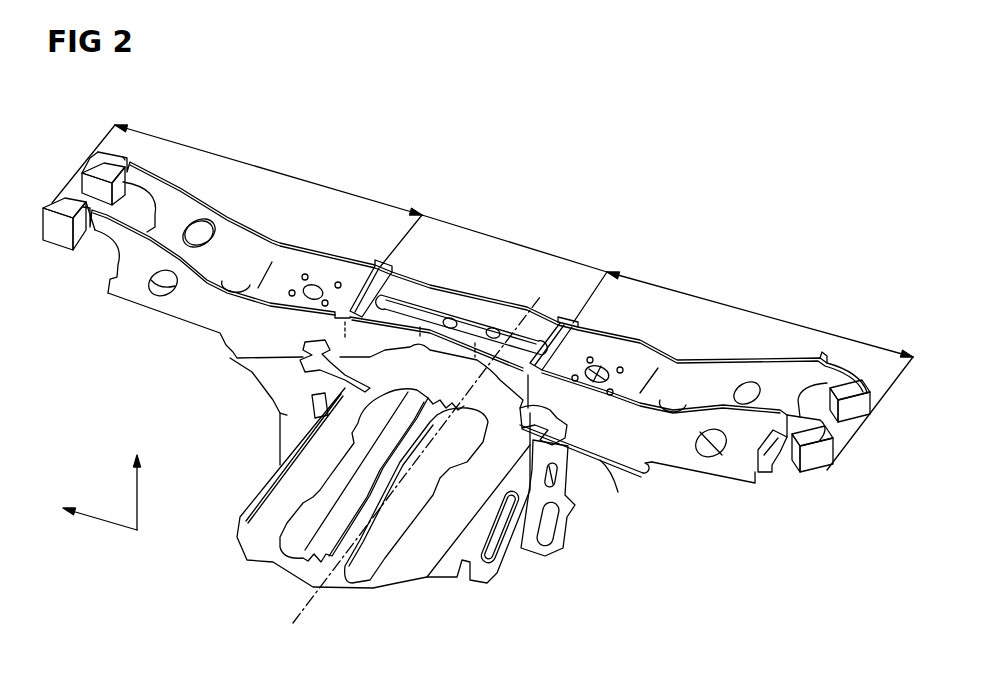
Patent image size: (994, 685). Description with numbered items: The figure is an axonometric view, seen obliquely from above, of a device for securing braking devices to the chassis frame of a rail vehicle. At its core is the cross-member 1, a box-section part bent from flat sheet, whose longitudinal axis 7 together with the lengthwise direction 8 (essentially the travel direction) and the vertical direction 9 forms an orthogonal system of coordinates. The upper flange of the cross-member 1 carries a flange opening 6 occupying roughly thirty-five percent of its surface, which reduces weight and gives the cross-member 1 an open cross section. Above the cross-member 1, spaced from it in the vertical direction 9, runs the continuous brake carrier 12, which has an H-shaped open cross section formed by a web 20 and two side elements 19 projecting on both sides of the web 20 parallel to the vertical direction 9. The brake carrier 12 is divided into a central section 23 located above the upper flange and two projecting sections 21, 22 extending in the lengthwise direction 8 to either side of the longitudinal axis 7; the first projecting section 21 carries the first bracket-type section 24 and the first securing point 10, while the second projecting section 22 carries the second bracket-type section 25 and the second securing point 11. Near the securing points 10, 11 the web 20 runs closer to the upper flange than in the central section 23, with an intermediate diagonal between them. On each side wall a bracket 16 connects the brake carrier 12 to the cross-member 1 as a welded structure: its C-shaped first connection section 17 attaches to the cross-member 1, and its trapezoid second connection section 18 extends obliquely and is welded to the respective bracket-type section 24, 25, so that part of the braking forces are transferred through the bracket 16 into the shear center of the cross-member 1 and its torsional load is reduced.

The cross-member 1 is at (386, 474).
The flange opening 6 is at (400, 523).
The longitudinal axis 7 is at (317, 600).
The lengthwise direction 8 is at (108, 524).
The vertical direction 9 is at (137, 497).
The first securing point 10 is at (97, 262).
The second securing point 11 is at (783, 470).
The brake carrier 12 is at (412, 310).
The bracket 16 is at (282, 417).
The first connection section 17 is at (530, 480).
The second connection section 18 is at (258, 360).
The side elements 19 is at (707, 370).
The web 20 is at (293, 268).
The first projecting section 21 is at (268, 169).
The second projecting section 22 is at (758, 312).
The central section 23 is at (509, 240).
The first bracket-type section 24 is at (228, 334).
The second bracket-type section 25 is at (680, 466).